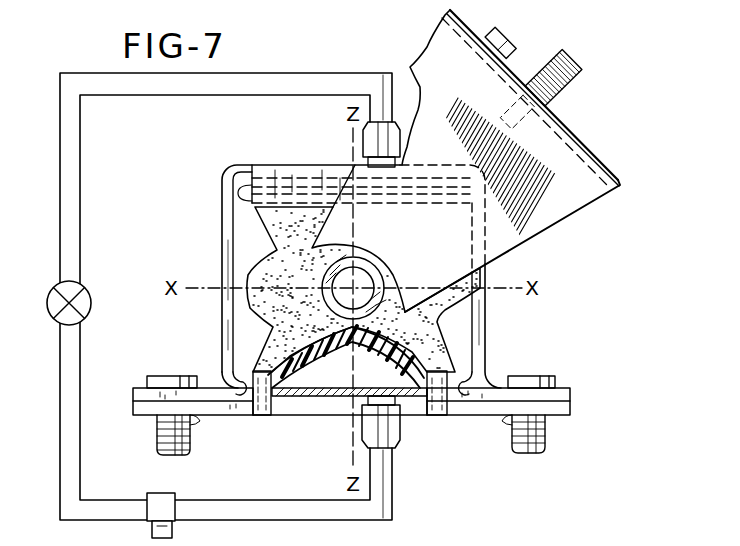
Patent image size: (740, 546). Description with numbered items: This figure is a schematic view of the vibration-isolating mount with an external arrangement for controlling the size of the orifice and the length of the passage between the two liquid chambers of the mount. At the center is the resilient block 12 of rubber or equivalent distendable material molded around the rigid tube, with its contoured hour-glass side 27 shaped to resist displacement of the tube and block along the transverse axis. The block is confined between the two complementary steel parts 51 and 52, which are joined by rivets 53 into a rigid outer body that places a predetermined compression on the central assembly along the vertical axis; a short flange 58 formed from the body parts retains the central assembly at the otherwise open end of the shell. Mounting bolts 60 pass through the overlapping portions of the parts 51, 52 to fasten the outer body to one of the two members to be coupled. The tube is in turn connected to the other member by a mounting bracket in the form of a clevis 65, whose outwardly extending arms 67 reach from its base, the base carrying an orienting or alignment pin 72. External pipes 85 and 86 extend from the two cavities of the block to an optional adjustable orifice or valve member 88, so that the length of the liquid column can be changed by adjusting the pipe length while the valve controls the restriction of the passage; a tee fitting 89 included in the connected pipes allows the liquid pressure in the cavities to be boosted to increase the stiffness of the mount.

The resilient block 12 is at (440, 340).
The side of the block 27 is at (257, 306).
The complementary part 51 is at (232, 413).
The complementary part 52 is at (222, 231).
The rivets 53 is at (205, 381).
The flange 58 is at (317, 167).
The mounting bolts 60 is at (157, 436).
The clevis 65 is at (560, 229).
The arms 67 is at (427, 50).
The alignment pin 72 is at (498, 32).
The external pipe 85 is at (337, 96).
The external pipe 86 is at (393, 466).
The valve member 88 is at (86, 288).
The tee fitting 89 is at (173, 493).